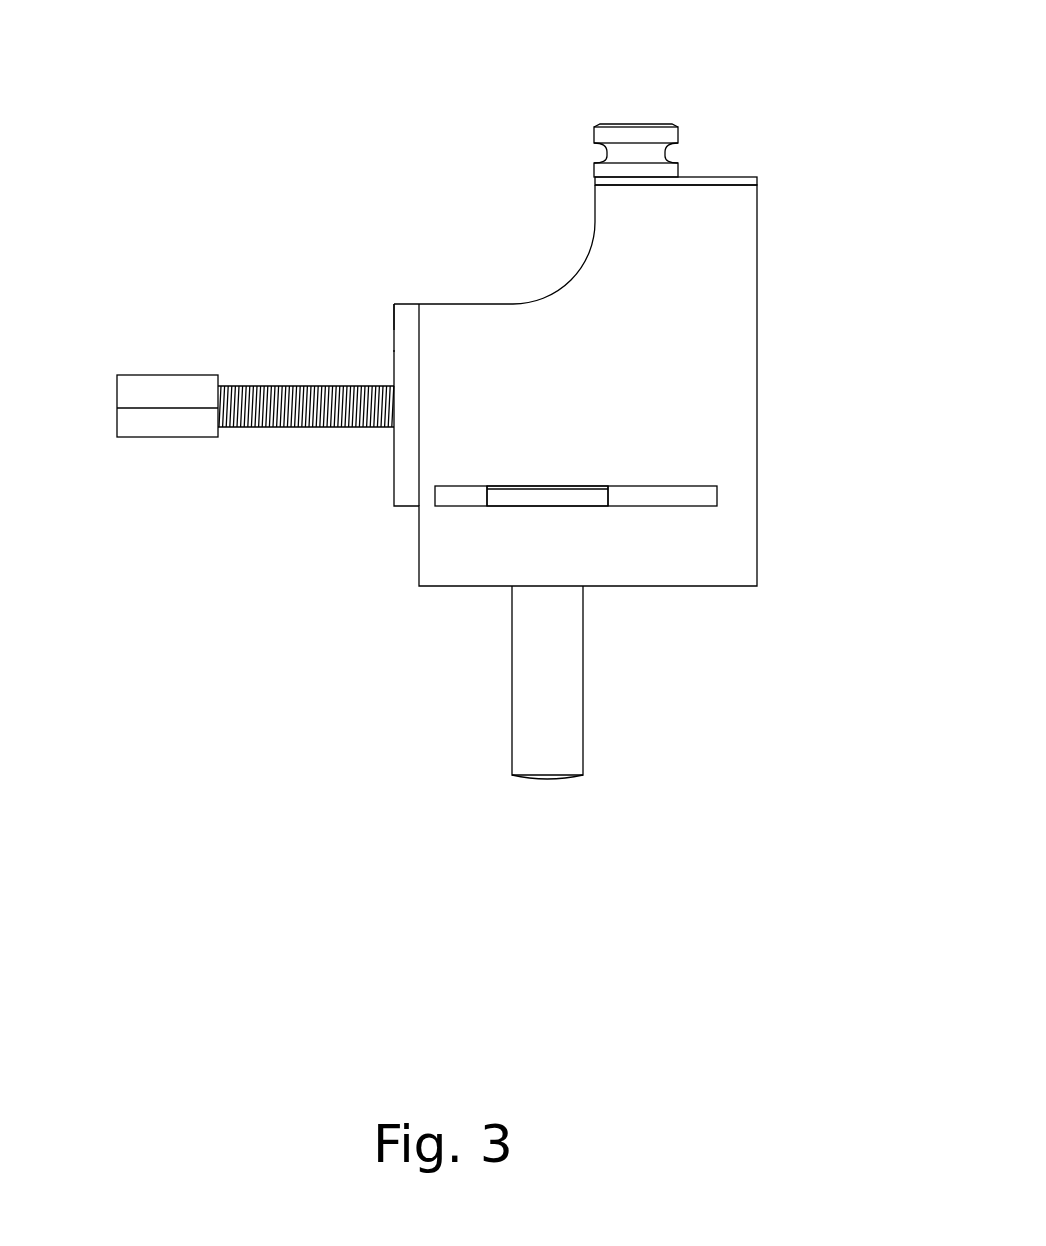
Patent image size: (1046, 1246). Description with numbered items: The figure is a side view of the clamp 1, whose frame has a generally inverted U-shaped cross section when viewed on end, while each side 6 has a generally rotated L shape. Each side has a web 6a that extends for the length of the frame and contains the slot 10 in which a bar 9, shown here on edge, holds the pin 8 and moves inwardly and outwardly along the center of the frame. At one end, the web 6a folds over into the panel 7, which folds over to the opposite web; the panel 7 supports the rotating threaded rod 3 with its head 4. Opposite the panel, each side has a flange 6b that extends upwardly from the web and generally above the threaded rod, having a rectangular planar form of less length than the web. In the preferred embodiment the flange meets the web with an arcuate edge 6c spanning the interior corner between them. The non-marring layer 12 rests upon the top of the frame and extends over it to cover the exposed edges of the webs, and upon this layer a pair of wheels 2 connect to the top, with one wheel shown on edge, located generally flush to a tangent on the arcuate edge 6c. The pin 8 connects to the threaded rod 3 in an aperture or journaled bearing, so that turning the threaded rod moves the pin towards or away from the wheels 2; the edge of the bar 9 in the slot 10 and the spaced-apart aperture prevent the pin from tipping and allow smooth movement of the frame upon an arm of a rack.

The clamp 1 is at (353, 72).
The wheels 2 is at (602, 127).
The threaded rod 3 is at (275, 386).
The head 4 is at (130, 375).
The side 6 is at (685, 370).
The web 6a is at (475, 436).
The flange 6b is at (695, 237).
The arcuate edge 6c is at (568, 272).
The panel 7 is at (384, 330).
The pin 8 is at (573, 727).
The bar 9 is at (560, 496).
The slot 10 is at (657, 497).
The non-marring layer 12 is at (722, 175).